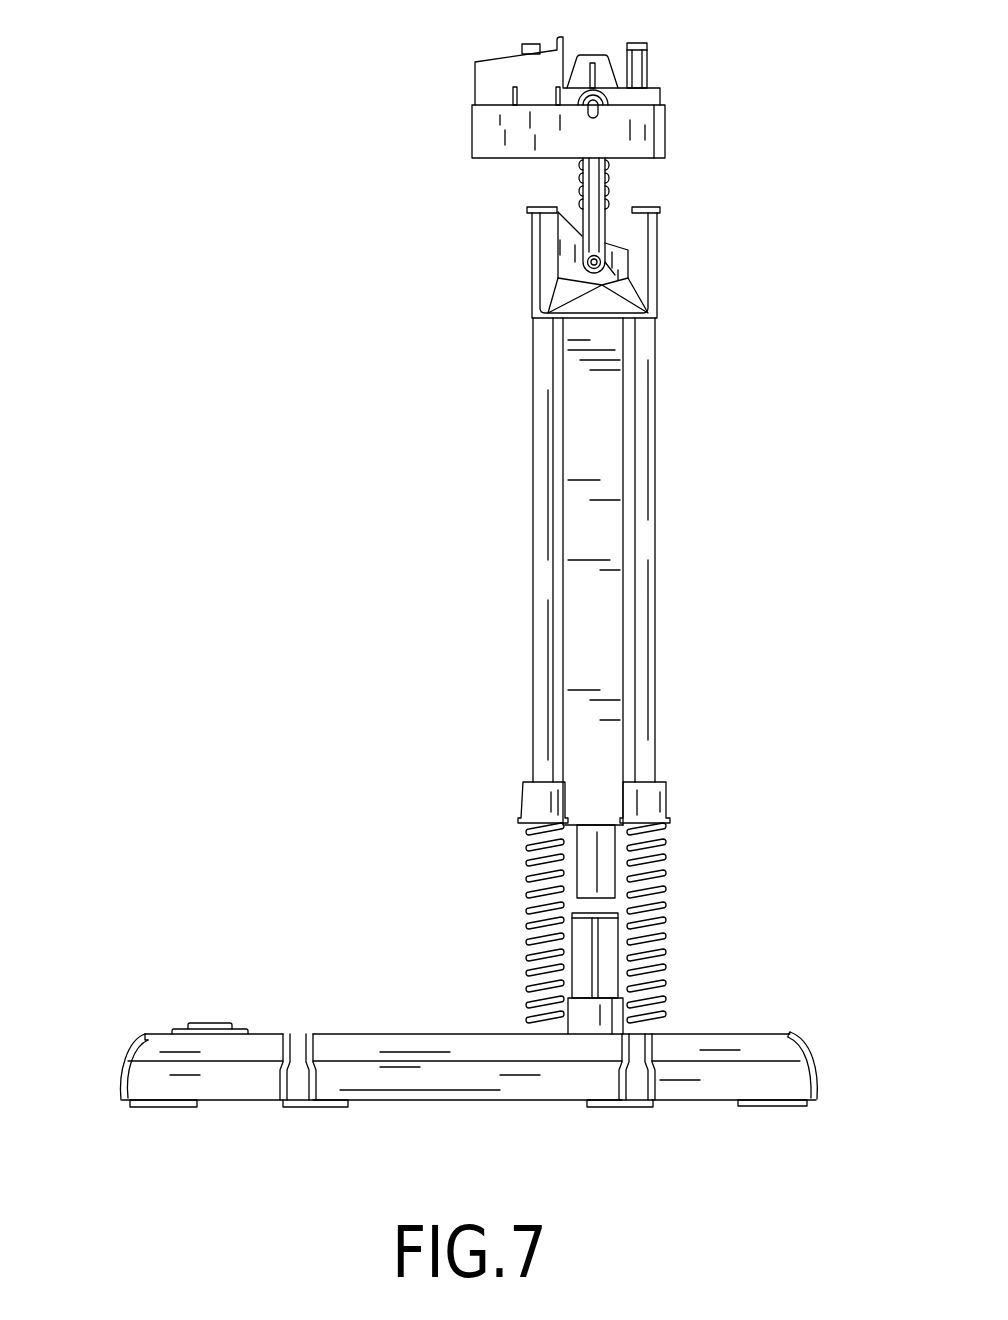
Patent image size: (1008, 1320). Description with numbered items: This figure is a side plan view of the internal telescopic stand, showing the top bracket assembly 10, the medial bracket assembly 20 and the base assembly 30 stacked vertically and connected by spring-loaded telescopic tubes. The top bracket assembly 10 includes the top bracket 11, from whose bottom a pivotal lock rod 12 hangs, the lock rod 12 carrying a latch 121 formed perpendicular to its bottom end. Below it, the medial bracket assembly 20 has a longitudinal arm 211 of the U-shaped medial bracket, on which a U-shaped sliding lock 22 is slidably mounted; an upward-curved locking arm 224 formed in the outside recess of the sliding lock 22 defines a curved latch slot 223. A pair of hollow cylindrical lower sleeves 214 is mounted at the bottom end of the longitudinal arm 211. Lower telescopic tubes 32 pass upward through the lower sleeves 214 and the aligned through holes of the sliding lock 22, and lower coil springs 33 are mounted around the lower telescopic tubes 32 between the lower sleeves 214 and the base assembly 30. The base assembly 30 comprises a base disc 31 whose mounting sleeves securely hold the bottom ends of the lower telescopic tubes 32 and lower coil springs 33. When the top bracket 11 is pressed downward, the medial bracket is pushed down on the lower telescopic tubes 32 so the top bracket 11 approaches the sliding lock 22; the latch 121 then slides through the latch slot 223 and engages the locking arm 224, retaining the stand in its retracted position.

The top bracket assembly 10 is at (708, 71).
The top bracket 11 is at (600, 128).
The pivotal lock rod 12 is at (583, 183).
The latch 121 is at (650, 267).
The medial bracket assembly 20 is at (716, 405).
The sliding lock 22 is at (597, 260).
The latch slot 223 is at (635, 296).
The locking arm 224 is at (620, 251).
The longitudinal arm 211 is at (605, 468).
The lower sleeve 214 is at (653, 845).
The base assembly 30 is at (757, 977).
The base disc 31 is at (705, 1040).
The lower telescopic tube 32 is at (645, 937).
The lower coil spring 33 is at (657, 897).